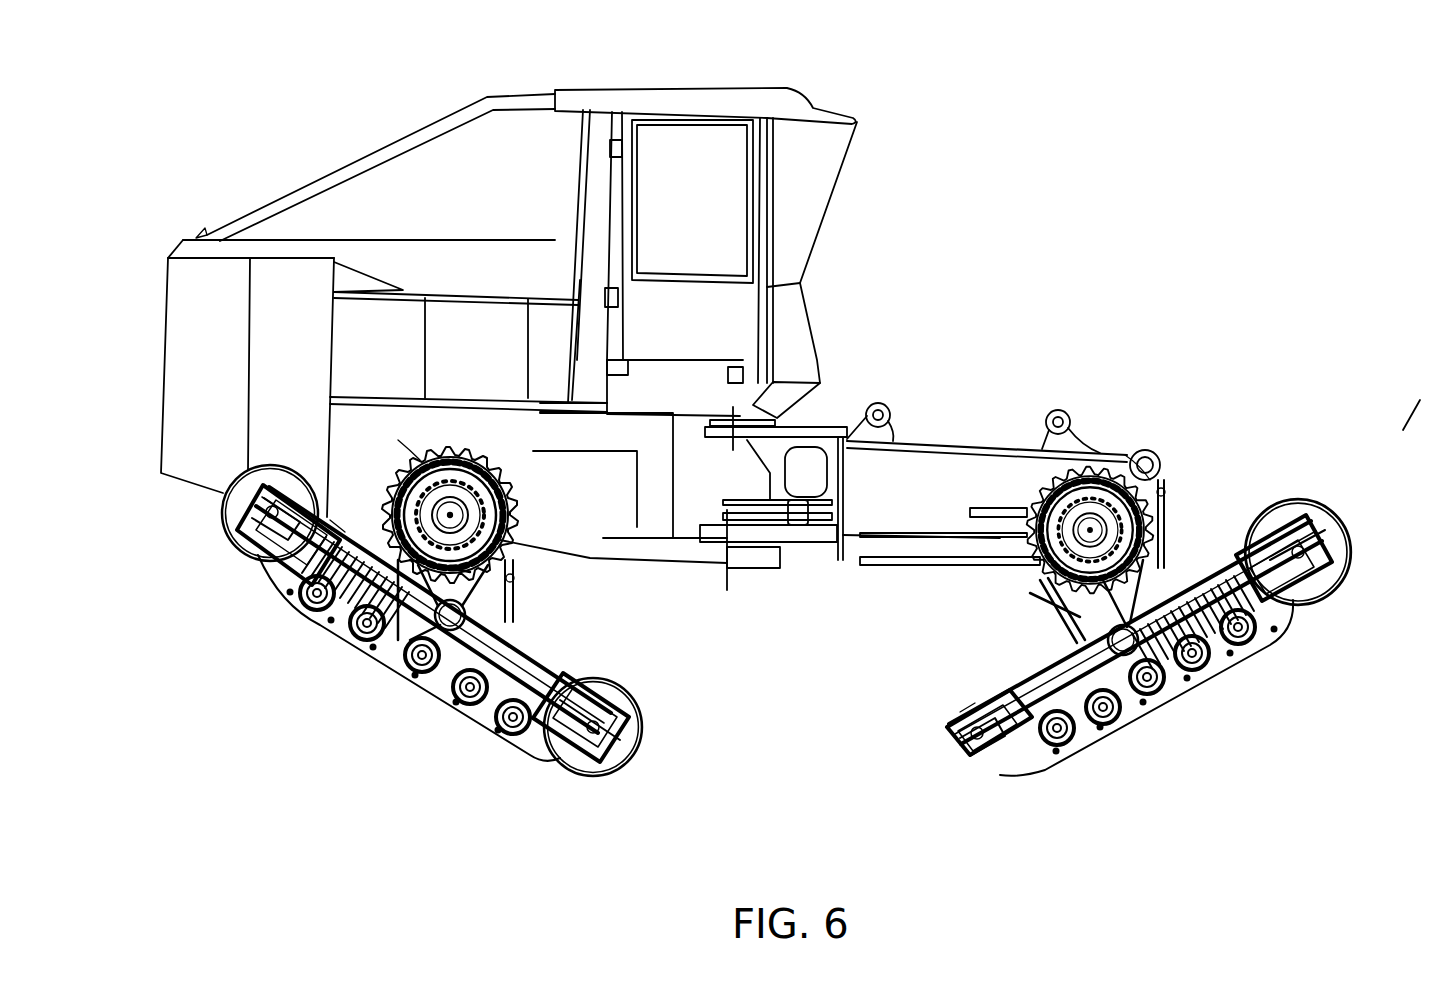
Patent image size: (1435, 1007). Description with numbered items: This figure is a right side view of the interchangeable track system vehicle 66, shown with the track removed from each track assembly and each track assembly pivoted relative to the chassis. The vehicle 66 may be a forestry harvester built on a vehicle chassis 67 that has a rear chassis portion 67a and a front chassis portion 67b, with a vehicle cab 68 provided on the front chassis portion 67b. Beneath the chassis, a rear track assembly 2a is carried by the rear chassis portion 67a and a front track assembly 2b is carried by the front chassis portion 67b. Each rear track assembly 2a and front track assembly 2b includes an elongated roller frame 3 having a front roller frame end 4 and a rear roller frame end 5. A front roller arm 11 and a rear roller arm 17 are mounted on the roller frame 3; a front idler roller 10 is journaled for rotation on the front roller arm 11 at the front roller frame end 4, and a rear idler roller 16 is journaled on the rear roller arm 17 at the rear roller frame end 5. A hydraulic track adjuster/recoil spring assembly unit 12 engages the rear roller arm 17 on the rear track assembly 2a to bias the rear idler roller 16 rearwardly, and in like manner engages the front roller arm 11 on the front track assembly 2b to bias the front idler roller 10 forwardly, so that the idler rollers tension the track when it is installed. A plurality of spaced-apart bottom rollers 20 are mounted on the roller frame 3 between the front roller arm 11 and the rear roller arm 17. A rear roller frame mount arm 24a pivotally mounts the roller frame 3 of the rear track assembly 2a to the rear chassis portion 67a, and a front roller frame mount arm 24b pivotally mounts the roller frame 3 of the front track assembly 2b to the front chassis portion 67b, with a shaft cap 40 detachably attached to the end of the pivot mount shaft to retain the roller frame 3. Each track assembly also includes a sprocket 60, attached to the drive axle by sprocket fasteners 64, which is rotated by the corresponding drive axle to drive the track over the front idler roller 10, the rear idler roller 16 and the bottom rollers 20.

The vehicle cab 68 is at (640, 87).
The vehicle 66 is at (336, 160).
The vehicle chassis 67 is at (157, 363).
The front chassis portion 67b is at (187, 435).
The rear chassis portion 67a is at (957, 463).
The sprocket 60 is at (482, 452).
The sprocket fasteners 64 is at (422, 455).
The roller frame 3 is at (330, 520).
The front roller frame end 4 is at (250, 506).
The front idler roller 10 is at (226, 546).
The front roller arm 11 is at (272, 560).
The front track assembly 2b is at (332, 661).
The rear track assembly 2a is at (1042, 776).
The hydraulic track adjuster/recoil spring assembly unit 12 is at (395, 672).
The bottom rollers 20 is at (437, 690).
The front roller frame mount arm 24b is at (519, 613).
The rear roller frame mount arm 24a is at (1054, 650).
The shaft cap 40 is at (506, 614).
The rear roller arm 17 is at (566, 692).
The rear idler roller 16 is at (648, 722).
The rear roller frame end 5 is at (630, 756).